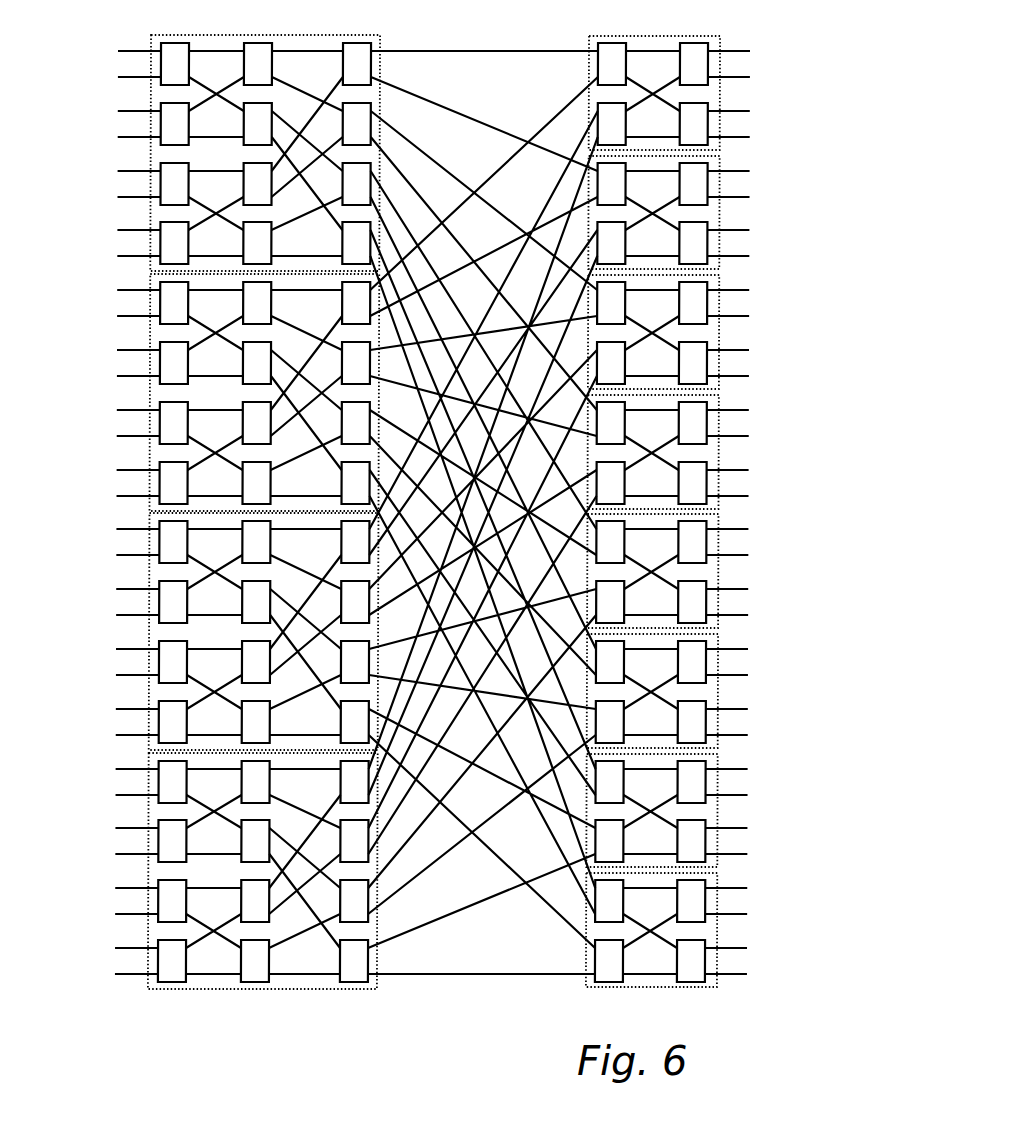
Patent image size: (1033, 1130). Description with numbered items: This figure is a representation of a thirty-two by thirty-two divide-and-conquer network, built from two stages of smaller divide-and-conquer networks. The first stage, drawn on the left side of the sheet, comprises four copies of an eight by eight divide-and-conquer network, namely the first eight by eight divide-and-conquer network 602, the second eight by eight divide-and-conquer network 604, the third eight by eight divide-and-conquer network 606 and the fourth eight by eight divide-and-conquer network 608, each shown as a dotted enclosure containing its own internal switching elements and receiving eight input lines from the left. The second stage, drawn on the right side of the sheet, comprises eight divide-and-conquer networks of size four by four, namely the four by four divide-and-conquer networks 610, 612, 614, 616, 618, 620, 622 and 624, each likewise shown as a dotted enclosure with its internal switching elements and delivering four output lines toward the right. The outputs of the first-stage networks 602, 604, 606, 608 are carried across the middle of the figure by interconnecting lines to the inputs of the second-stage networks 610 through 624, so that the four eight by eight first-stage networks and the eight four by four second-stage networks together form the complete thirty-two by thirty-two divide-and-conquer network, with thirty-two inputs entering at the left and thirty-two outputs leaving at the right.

The 8×8 divide-and-conquer network 602 is at (151, 35).
The 8×8 divide-and-conquer network 604 is at (151, 274).
The 8×8 divide-and-conquer network 606 is at (151, 513).
The 8×8 divide-and-conquer network 608 is at (151, 753).
The 4×4 divide-and-conquer network 610 is at (720, 36).
The 4×4 divide-and-conquer network 612 is at (720, 156).
The 4×4 divide-and-conquer network 614 is at (720, 275).
The 4×4 divide-and-conquer network 616 is at (720, 395).
The 4×4 divide-and-conquer network 618 is at (720, 514).
The 4×4 divide-and-conquer network 620 is at (720, 634).
The 4×4 divide-and-conquer network 622 is at (720, 754).
The 4×4 divide-and-conquer network 624 is at (720, 873).